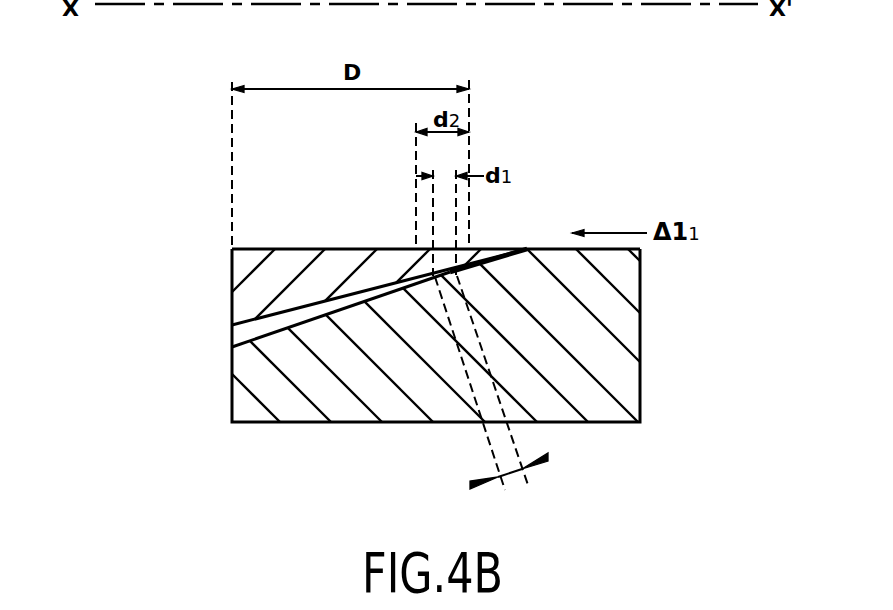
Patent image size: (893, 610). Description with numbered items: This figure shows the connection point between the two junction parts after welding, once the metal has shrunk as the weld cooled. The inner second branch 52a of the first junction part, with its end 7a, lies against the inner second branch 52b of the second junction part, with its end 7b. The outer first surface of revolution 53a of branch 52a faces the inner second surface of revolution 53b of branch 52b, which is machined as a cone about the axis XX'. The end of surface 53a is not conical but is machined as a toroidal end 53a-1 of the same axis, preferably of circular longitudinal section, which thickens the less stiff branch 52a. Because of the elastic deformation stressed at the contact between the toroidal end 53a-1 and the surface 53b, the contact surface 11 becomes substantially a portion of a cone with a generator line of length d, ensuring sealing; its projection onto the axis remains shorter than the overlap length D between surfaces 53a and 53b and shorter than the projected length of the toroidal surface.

The end of inner second branch 7a is at (465, 266).
The end of inner second branch 7b is at (232, 405).
The inner second branch 52a is at (250, 292).
The inner second branch 52b is at (336, 388).
The outer first surface of revolution 53a is at (251, 328).
The inner second surface of revolution 53b is at (283, 329).
The toroidal end 53a-1 is at (460, 270).
The contact surface 11 is at (449, 283).